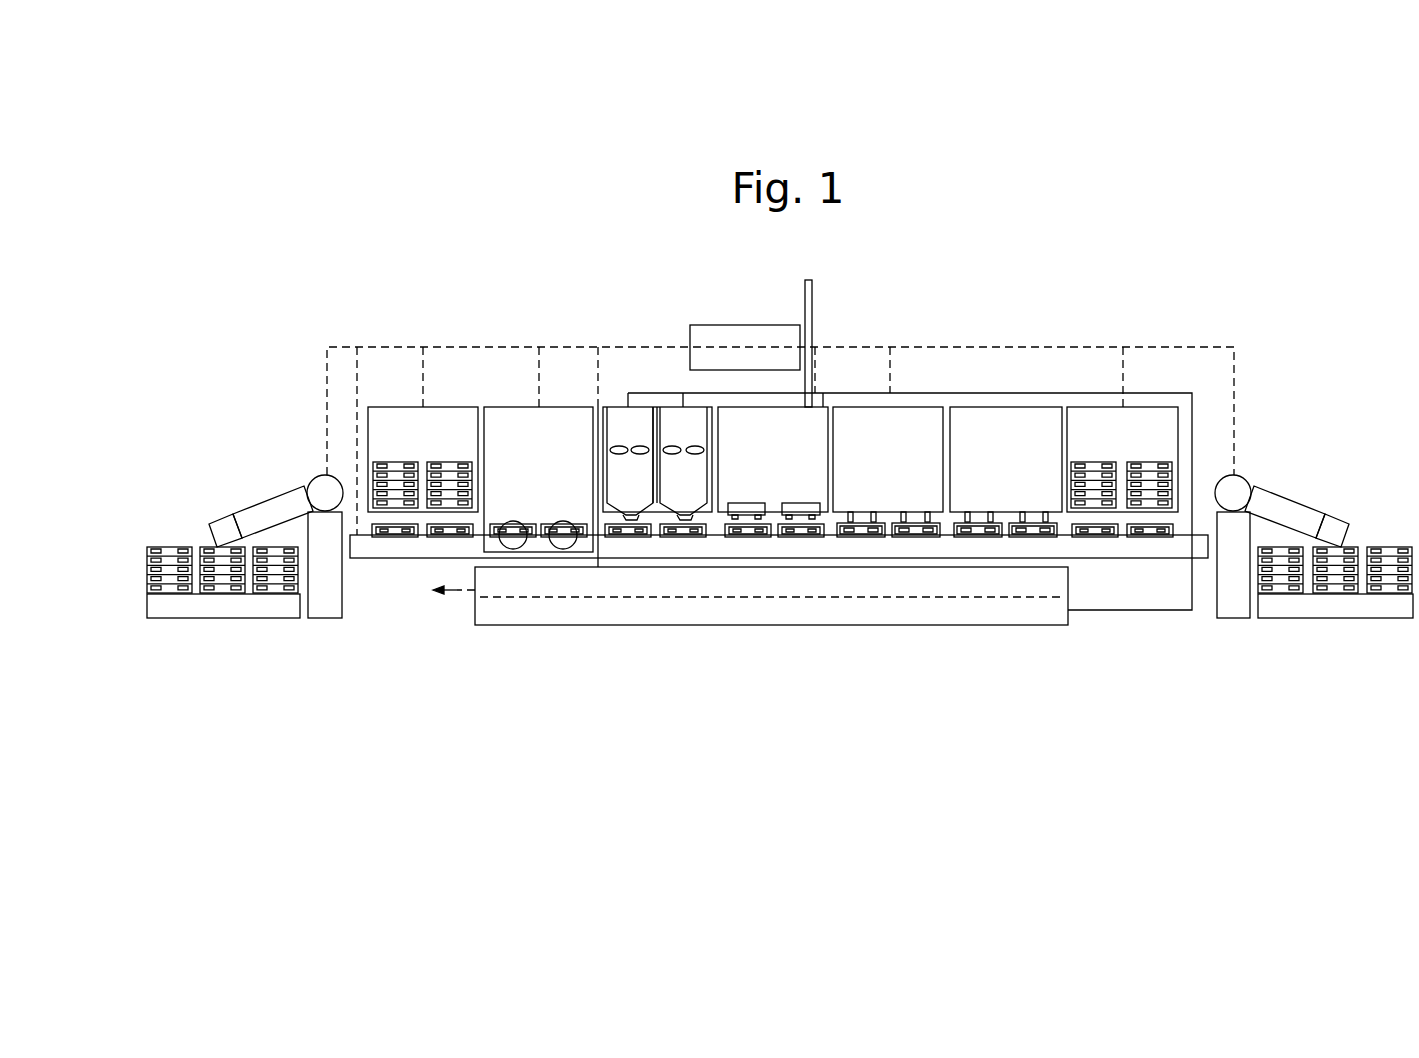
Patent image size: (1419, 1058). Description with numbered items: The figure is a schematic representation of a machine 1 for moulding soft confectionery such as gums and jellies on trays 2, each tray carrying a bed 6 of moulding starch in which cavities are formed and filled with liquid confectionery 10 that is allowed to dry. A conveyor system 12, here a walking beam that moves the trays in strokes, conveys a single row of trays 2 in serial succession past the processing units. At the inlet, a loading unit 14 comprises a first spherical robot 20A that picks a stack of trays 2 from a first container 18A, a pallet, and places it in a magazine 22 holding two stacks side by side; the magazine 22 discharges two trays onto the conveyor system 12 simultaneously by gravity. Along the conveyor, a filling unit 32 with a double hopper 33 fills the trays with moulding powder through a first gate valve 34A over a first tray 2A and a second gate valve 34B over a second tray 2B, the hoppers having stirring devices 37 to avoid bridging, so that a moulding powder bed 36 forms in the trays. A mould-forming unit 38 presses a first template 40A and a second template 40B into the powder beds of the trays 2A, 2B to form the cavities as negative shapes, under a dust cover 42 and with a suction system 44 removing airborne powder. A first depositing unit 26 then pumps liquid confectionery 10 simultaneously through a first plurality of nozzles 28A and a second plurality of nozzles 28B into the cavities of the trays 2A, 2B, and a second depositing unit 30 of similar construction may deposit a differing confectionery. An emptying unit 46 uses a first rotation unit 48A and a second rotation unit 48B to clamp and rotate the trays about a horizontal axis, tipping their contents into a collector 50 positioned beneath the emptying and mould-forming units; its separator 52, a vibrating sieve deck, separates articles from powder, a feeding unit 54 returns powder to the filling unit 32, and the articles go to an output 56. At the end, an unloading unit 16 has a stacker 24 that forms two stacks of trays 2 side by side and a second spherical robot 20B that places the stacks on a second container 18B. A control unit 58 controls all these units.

The machine 1 is at (1136, 303).
The tray 2 is at (147, 567).
The first tray 2A is at (638, 538).
The second tray 2B is at (690, 538).
The bed of moulding powder 6 is at (172, 547).
The liquid confectionery 10 is at (888, 462).
The conveyor system 12 is at (403, 550).
The loading unit 14 is at (423, 459).
The unloading unit 16 is at (1070, 438).
The first container 18A is at (272, 618).
The second container 18B is at (1337, 618).
The first spherical robot 20A is at (270, 497).
The second spherical robot 20B is at (1287, 498).
The magazine 22 is at (368, 478).
The stacker 24 is at (1173, 490).
The first depositing unit 26 is at (835, 438).
The first plurality of nozzles 28A is at (873, 512).
The second plurality of nozzles 28B is at (927, 512).
The second depositing unit 30 is at (952, 438).
The filling unit 32 is at (605, 438).
The double hopper 33 is at (668, 440).
The first gate valve 34A is at (630, 513).
The second gate valve 34B is at (684, 513).
The moulding powder bed 36 is at (638, 522).
The stirring devices 37 is at (640, 448).
The mould-forming unit 38 is at (720, 438).
The first template 40A is at (742, 503).
The second template 40B is at (795, 503).
The dust cover 42 is at (823, 407).
The suction system 44 is at (805, 305).
The emptying unit 46 is at (487, 438).
The first rotation unit 48A is at (513, 522).
The second rotation unit 48B is at (563, 522).
The collector 50 is at (480, 594).
The separator 52 is at (535, 598).
The feeding unit 54 is at (1140, 612).
The output 56 is at (457, 592).
The control unit 58 is at (732, 361).